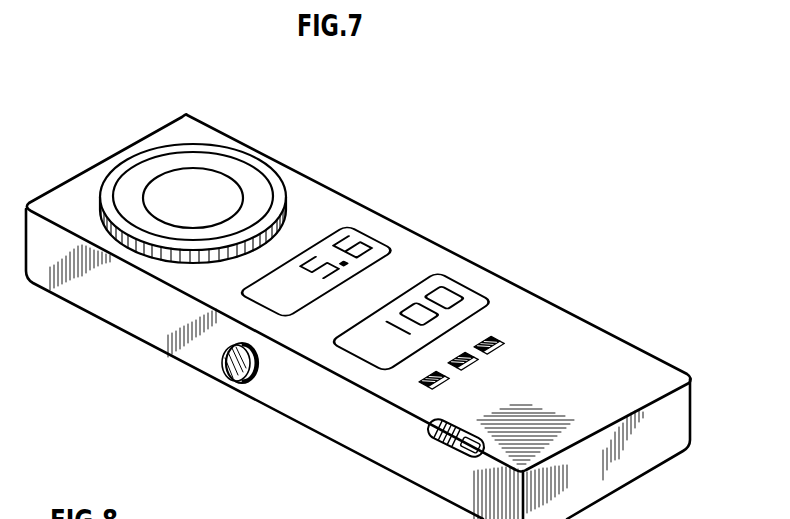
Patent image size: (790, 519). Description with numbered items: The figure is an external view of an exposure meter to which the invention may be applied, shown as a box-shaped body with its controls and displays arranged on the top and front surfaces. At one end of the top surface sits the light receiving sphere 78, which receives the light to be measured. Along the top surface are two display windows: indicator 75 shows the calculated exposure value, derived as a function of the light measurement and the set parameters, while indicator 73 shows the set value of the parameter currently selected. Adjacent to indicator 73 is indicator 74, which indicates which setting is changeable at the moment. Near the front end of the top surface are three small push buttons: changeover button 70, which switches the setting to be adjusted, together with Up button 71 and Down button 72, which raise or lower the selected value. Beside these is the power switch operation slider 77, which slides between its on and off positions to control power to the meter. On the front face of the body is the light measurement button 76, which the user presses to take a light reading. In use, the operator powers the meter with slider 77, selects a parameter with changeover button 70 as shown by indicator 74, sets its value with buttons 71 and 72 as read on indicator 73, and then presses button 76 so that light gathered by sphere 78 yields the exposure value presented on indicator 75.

The changeover button 70 is at (443, 383).
The Up button 71 is at (472, 364).
The Down button 72 is at (500, 347).
The indicator 73 is at (477, 300).
The indicator 74 is at (350, 348).
The indicator 75 is at (375, 242).
The light measurement button 76 is at (223, 377).
The power switch operation slider 77 is at (428, 428).
The light receiving sphere 78 is at (220, 188).